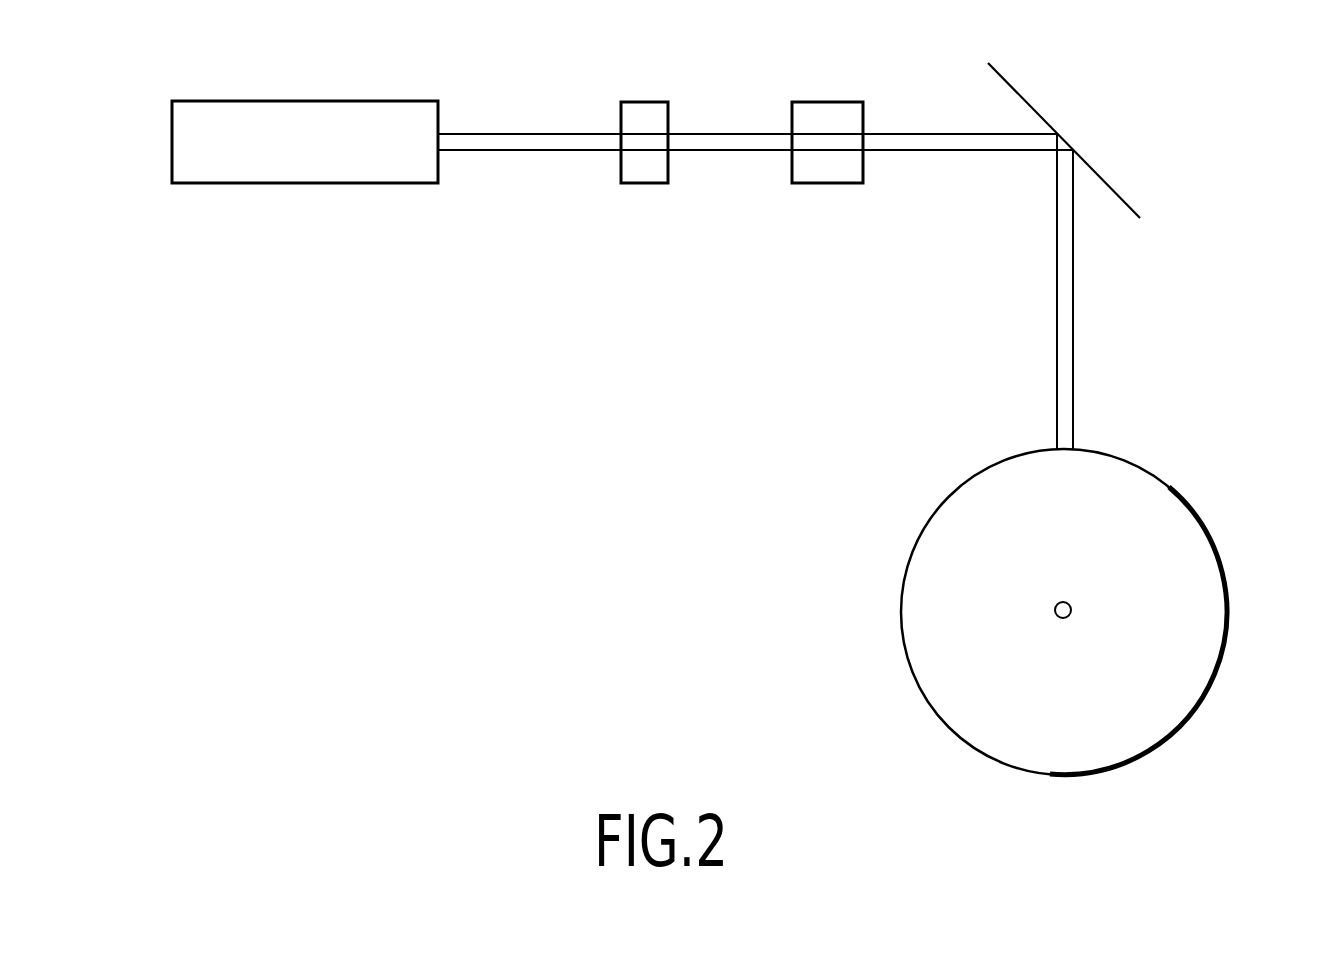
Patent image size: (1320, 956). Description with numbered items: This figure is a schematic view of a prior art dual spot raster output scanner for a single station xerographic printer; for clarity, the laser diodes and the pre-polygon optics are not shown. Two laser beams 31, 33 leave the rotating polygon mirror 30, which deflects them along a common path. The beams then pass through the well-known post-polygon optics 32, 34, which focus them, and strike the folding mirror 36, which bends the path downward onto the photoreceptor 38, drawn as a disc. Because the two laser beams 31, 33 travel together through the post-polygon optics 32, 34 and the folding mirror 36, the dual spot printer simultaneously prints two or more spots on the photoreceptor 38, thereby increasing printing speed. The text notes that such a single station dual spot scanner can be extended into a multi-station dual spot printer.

The rotating polygon mirror 30 is at (320, 101).
The laser beam 31 is at (483, 128).
The post-polygon optics 32 is at (638, 101).
The laser beam 33 is at (483, 151).
The post-polygon optics 34 is at (820, 101).
The folding mirror 36 is at (1028, 104).
The photoreceptor 38 is at (1230, 598).